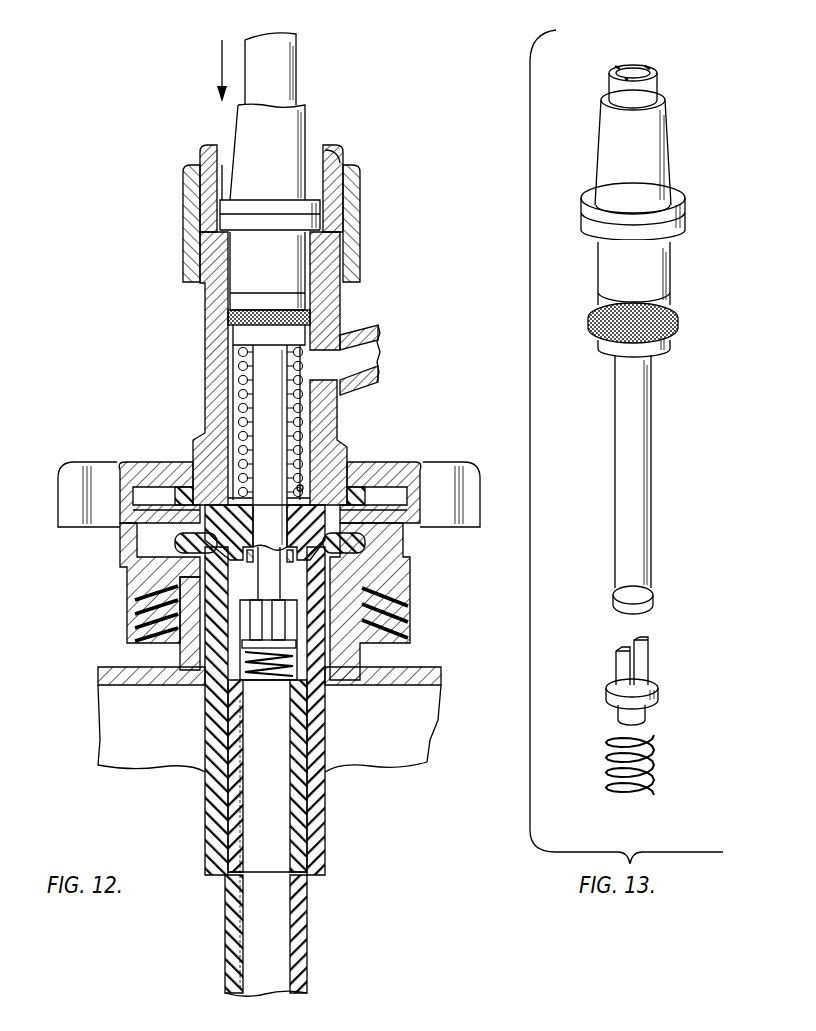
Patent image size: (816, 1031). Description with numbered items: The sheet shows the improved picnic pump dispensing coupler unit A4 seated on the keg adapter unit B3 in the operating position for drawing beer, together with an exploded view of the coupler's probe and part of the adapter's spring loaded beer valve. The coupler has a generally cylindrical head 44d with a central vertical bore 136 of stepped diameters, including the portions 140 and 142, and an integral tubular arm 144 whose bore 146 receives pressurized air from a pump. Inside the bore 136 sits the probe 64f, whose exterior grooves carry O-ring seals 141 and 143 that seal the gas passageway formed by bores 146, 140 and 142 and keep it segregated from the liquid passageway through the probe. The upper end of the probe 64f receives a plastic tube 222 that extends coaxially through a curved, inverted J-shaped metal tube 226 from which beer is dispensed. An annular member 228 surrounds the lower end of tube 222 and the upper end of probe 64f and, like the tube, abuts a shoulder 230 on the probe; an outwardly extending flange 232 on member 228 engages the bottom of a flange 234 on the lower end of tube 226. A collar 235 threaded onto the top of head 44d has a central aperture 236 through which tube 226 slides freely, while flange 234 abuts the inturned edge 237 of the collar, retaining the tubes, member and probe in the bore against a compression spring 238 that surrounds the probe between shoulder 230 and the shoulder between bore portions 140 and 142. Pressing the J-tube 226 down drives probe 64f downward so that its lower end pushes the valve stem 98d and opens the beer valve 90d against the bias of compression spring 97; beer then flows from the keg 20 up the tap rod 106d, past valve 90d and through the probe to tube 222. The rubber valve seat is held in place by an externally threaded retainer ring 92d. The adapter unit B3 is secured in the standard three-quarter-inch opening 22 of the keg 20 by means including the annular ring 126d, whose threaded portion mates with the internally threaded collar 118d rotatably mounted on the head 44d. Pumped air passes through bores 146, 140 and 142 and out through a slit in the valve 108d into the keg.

In FIG. 12, the plastic tube 222 is at (298, 44).
In FIG. 13, the plastic tube 222 is at (657, 72).
In FIG. 12, the inverted J-shaped metal tube 226 is at (237, 123).
In FIG. 13, the inverted J-shaped metal tube 226 is at (662, 142).
In FIG. 12, the central aperture 236 is at (312, 148).
In FIG. 12, the inturned edge 237 is at (331, 165).
In FIG. 12, the flange 234 is at (313, 209).
In FIG. 13, the flange 234 is at (688, 205).
In FIG. 12, the outwardly extending flange 232 is at (236, 221).
In FIG. 13, the outwardly extending flange 232 is at (688, 227).
In FIG. 12, the collar 235 is at (353, 263).
In FIG. 12, the annular member 228 is at (248, 262).
In FIG. 13, the annular member 228 is at (662, 268).
In FIG. 12, the shoulder 230 is at (240, 302).
In FIG. 13, the shoulder 230 is at (670, 340).
In FIG. 12, the sealing ring 141 is at (312, 315).
In FIG. 13, the sealing ring 141 is at (678, 311).
In FIG. 12, the head 44d is at (198, 341).
In FIG. 12, the tubular arm 144 is at (362, 337).
In FIG. 12, the central bore 136 is at (232, 379).
In FIG. 12, the bore of tubular arm 146 is at (355, 373).
In FIG. 12, the compression spring 238 is at (236, 406).
In FIG. 12, the probe 64f is at (288, 418).
In FIG. 13, the probe 64f is at (640, 450).
In FIG. 12, the bore portion 140 is at (240, 440).
In FIG. 12, the bore portion 142 is at (303, 487).
In FIG. 12, the collar 118d is at (150, 530).
In FIG. 12, the retainer ring 92d is at (410, 566).
In FIG. 12, the annular ring 126d is at (128, 583).
In FIG. 12, the sealing ring 143 is at (245, 562).
In FIG. 13, the sealing ring 143 is at (652, 593).
In FIG. 12, the beer valve 90d is at (330, 647).
In FIG. 13, the beer valve 90d is at (664, 693).
In FIG. 13, the valve stem portion 98d is at (648, 655).
In FIG. 13, the compression spring 97 is at (655, 777).
In FIG. 12, the keg opening 22 is at (205, 690).
In FIG. 12, the beer keg 20 is at (357, 686).
In FIG. 12, the valve 108d is at (326, 828).
In FIG. 12, the tap rod 106d is at (309, 940).
In FIG. 12, the dispenser coupler unit A4 is at (98, 420).
In FIG. 12, the keg adapter unit B3 is at (193, 718).